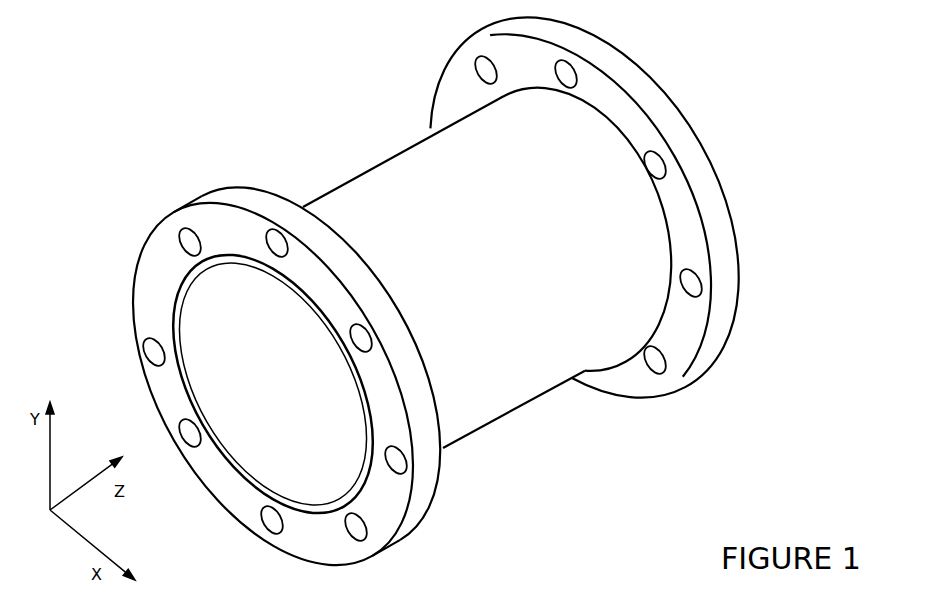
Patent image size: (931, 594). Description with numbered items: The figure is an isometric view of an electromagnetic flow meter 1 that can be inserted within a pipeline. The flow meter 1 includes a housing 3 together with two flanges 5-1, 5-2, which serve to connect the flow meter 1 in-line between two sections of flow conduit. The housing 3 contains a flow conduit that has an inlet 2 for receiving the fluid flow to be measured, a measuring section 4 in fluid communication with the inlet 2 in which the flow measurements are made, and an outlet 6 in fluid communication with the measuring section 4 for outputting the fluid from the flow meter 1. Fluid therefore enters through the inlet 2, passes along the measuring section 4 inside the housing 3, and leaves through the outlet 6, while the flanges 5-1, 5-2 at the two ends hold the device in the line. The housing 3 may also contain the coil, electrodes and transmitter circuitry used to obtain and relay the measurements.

The electromagnetic flow meter 1 is at (440, 305).
The inlet 2 is at (282, 400).
The housing 3 is at (538, 383).
The measuring section 4 is at (505, 224).
The flange 5-1 is at (422, 495).
The flange 5-2 is at (723, 273).
The outlet 6 is at (740, 116).